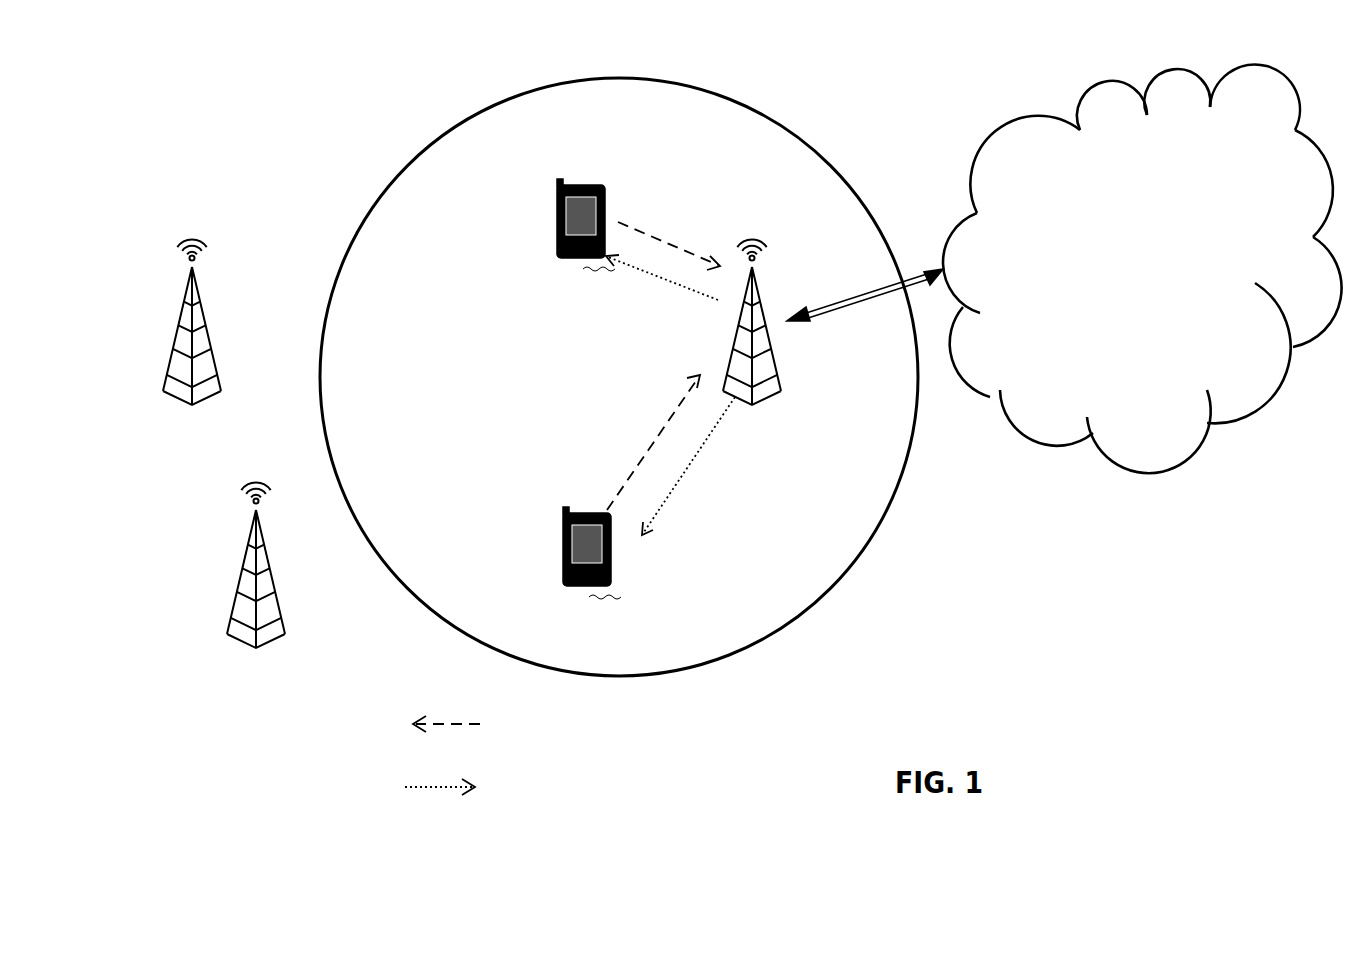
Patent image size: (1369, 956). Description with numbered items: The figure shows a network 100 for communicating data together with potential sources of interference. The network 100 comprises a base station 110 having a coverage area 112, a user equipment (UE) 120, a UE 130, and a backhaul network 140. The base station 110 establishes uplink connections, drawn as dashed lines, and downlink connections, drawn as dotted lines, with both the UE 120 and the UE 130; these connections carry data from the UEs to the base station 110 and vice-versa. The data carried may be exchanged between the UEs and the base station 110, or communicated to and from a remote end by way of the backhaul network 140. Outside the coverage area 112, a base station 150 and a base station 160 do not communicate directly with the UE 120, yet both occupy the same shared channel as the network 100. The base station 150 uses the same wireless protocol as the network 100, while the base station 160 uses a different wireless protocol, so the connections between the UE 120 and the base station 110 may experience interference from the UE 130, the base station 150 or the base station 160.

The network 100 is at (447, 97).
The base station 110 is at (750, 232).
The coverage area 112 is at (387, 422).
The user equipment (UE) 120 is at (588, 591).
The UE 130 is at (556, 227).
The backhaul network 140 is at (1250, 371).
The base station 150 is at (228, 625).
The base station 160 is at (178, 320).